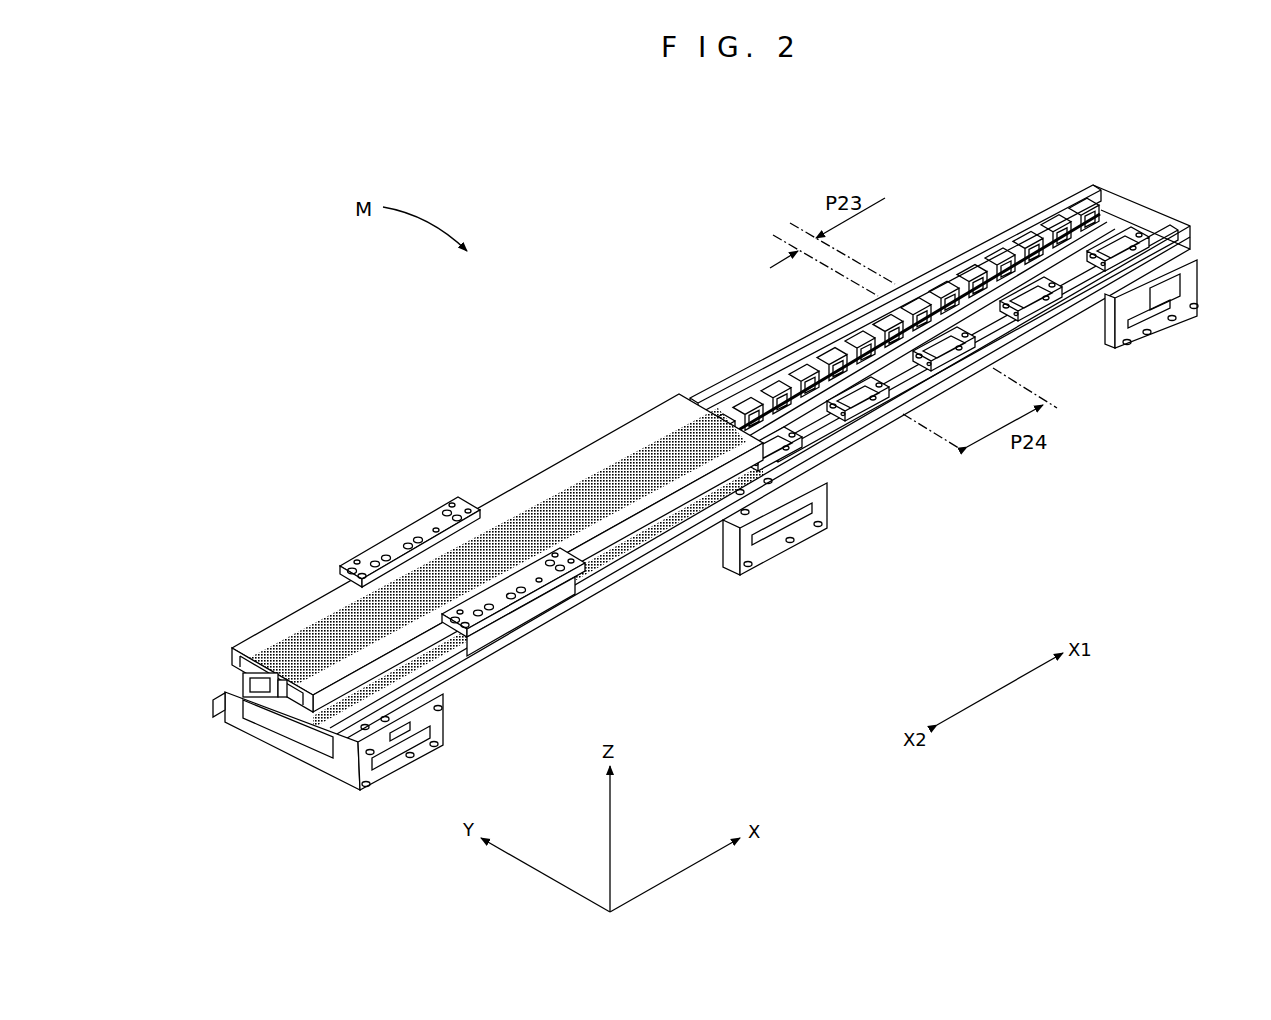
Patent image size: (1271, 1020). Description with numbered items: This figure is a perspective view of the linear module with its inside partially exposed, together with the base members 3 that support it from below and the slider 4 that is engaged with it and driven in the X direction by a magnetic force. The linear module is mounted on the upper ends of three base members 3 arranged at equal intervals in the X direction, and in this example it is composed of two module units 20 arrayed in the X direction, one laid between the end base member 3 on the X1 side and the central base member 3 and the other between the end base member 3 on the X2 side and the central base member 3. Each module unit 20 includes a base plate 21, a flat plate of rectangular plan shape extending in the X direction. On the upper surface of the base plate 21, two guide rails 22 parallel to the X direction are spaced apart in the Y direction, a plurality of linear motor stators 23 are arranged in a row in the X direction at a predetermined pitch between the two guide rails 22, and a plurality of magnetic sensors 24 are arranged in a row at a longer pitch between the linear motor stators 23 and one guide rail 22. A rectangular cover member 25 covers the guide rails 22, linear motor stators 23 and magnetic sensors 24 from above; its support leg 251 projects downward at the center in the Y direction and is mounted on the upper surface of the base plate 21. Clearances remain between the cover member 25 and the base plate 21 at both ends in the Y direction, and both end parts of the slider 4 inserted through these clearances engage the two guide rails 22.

The module unit 20 is at (721, 455).
The base plate 21 is at (1073, 336).
The guide rail 22 is at (987, 242).
The linear motor stator 23 is at (1040, 215).
The magnetic sensor 24 is at (940, 300).
The cover member 25 is at (497, 571).
The support leg 251 is at (282, 700).
The base member 3 is at (1200, 292).
The slider 4 is at (440, 530).